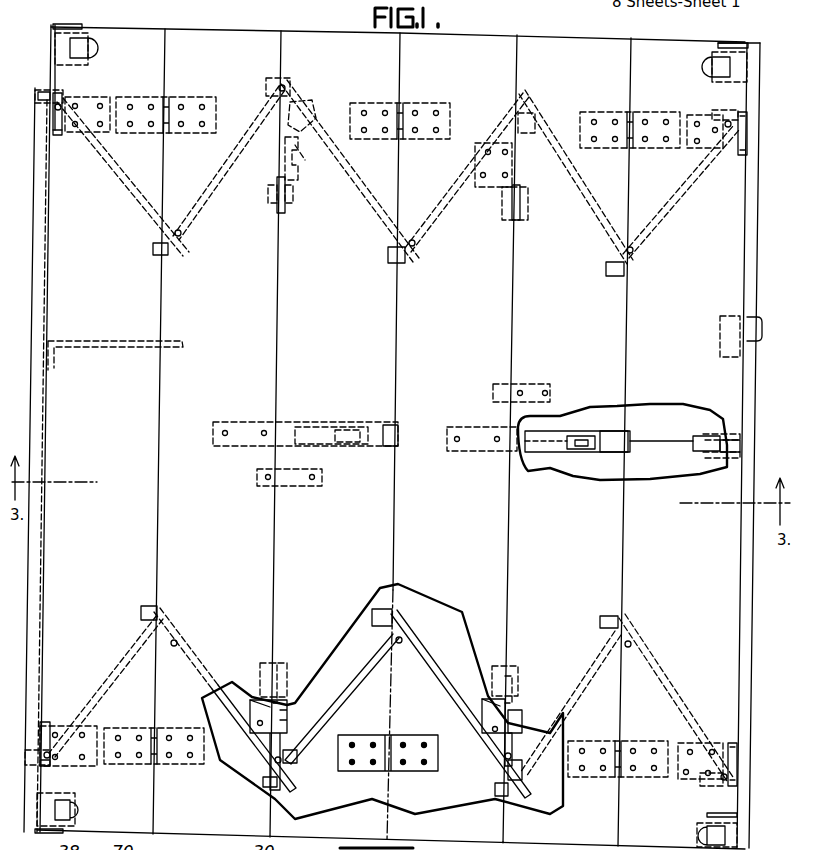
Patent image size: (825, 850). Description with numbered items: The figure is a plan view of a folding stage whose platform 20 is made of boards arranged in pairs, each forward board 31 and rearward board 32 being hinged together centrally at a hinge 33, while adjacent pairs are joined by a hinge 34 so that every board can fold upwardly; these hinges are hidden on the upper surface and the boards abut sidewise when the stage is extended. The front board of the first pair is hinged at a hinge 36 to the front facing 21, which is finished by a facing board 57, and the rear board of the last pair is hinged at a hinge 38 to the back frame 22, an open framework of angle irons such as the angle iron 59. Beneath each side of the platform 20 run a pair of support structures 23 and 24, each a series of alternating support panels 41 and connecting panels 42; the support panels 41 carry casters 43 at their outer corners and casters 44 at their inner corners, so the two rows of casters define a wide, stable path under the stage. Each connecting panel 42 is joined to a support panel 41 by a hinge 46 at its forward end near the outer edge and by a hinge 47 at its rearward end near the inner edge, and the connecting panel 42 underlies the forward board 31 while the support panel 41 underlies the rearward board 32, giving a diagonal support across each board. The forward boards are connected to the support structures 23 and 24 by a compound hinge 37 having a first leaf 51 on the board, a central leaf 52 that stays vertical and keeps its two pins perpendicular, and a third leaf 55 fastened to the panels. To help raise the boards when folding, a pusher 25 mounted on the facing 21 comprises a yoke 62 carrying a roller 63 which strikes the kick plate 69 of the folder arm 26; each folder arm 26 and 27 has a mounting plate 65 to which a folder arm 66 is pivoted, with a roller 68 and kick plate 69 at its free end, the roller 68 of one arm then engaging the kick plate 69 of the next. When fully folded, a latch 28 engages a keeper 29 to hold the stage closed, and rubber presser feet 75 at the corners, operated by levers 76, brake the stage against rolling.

The platform 20 is at (282, 21).
The front facing 21 is at (760, 176).
The back frame 22 is at (34, 177).
The support structure 23 is at (378, 221).
The support structure 24 is at (433, 692).
The pusher 25 is at (722, 460).
The folder arm 26 is at (630, 442).
The folder arm 27 is at (378, 447).
The latch 28 is at (722, 362).
The keeper 29 is at (183, 341).
The forward board 31 is at (224, 37).
The rearward board 32 is at (125, 37).
The hinge 33 is at (172, 100).
The hinge 34 is at (271, 212).
The hinge 36 is at (735, 150).
The compound hinge 37 is at (268, 183).
The hinge 38 is at (62, 128).
The support panel 41 is at (140, 201).
The connecting panel 42 is at (200, 200).
The caster 43 is at (45, 90).
The caster 44 is at (153, 250).
The hinge 46 is at (70, 104).
The hinge 47 is at (178, 230).
The first leaf 51 is at (248, 146).
The central leaf 52 is at (308, 128).
The third leaf 55 is at (312, 120).
The facing board 57 is at (758, 227).
The angle iron 59 is at (14, 291).
The yoke 62 is at (710, 436).
The roller 63 is at (700, 443).
The mounting plate 65 is at (235, 420).
The folder arm 66 is at (315, 424).
The roller 68 is at (343, 430).
The kick plate 69 is at (398, 432).
The presser foot 75 is at (72, 24).
The lever 76 is at (98, 48).